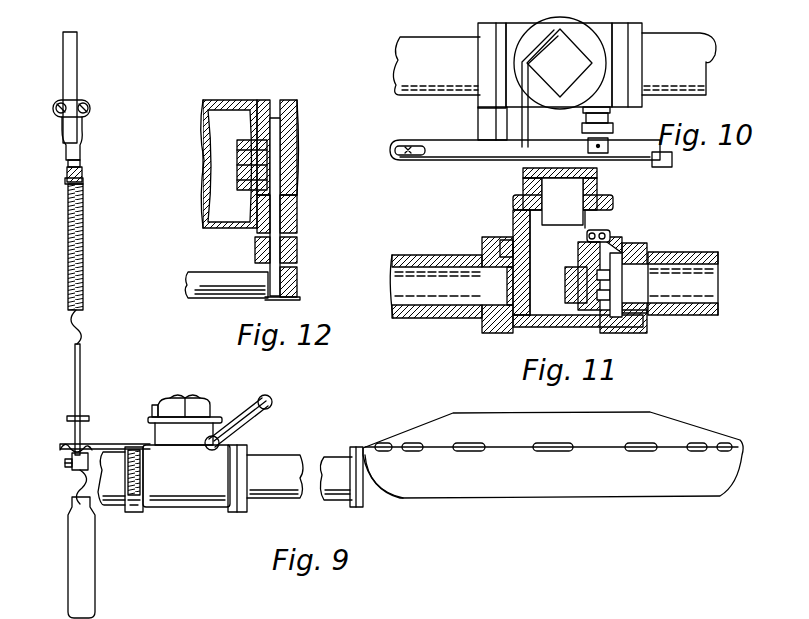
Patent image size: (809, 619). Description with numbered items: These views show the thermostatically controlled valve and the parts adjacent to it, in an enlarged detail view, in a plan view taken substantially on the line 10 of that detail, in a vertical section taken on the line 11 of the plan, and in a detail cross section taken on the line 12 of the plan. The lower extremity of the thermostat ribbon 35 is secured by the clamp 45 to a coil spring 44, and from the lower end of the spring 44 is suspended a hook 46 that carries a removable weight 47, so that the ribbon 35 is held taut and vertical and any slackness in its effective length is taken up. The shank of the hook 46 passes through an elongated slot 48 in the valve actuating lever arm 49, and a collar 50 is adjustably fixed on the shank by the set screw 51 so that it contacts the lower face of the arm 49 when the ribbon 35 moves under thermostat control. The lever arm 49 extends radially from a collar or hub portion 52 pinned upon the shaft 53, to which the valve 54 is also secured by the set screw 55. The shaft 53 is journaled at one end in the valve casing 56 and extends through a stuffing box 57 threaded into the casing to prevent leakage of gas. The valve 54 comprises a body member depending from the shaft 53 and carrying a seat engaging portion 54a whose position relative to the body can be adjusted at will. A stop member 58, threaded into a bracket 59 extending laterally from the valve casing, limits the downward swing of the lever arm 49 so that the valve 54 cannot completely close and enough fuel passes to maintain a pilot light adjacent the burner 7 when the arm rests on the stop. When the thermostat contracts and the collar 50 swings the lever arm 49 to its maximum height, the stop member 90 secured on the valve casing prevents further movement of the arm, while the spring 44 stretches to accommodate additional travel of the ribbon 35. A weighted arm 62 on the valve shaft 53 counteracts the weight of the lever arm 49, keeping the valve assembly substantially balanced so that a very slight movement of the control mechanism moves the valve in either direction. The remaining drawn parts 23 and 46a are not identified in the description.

In FIG. 9, the burner 7 is at (585, 483).
In FIG. 9, the section line 10— 10 is at (118, 370).
In FIG. 10, the section line 11— 11 is at (742, 63).
In FIG. 11, the section line 11— 11 is at (554, 285).
In FIG. 10, the section line 12— 12 is at (598, 165).
In FIG. 9, the valve body 23 is at (197, 505).
In FIG. 9, the ribbon 35 is at (70, 70).
In FIG. 9, the coil spring 44 is at (75, 218).
In FIG. 9, the clamp 45 is at (80, 153).
In FIG. 9, the hook 46 is at (78, 363).
In FIG. 10, the hook 46 is at (412, 158).
In FIG. 9, the stop plate 46a is at (88, 417).
In FIG. 9, the removable weight 47 is at (93, 580).
In FIG. 10, the elongated slot 48 is at (415, 145).
In FIG. 9, the valve actuating lever arm 49 is at (108, 443).
In FIG. 12, the valve actuating lever arm 49 is at (188, 300).
In FIG. 10, the valve actuating lever arm 49 is at (462, 152).
In FIG. 9, the collar 50 is at (72, 467).
In FIG. 9, the set screw 51 is at (65, 462).
In FIG. 12, the collar or hub portion 52 is at (297, 279).
In FIG. 12, the shaft 53 is at (285, 258).
In FIG. 11, the shaft 53 is at (612, 230).
In FIG. 12, the valve 54 is at (262, 140).
In FIG. 11, the valve 54 is at (628, 245).
In FIG. 11, the seat engaging portion 54a is at (600, 325).
In FIG. 12, the set screw 55 is at (262, 163).
In FIG. 11, the set screw 55 is at (578, 228).
In FIG. 12, the valve casing 56 is at (278, 123).
In FIG. 12, the stuffing box 57 is at (300, 232).
In FIG. 9, the stop member 58 is at (115, 485).
In FIG. 10, the bracket 59 is at (490, 125).
In FIG. 9, the weighted arm 62 is at (252, 425).
In FIG. 12, the weighted arm 62 is at (290, 300).
In FIG. 10, the weighted arm 62 is at (672, 162).
In FIG. 9, the stop member 90 is at (165, 407).
In FIG. 10, the stop member 90 is at (528, 125).